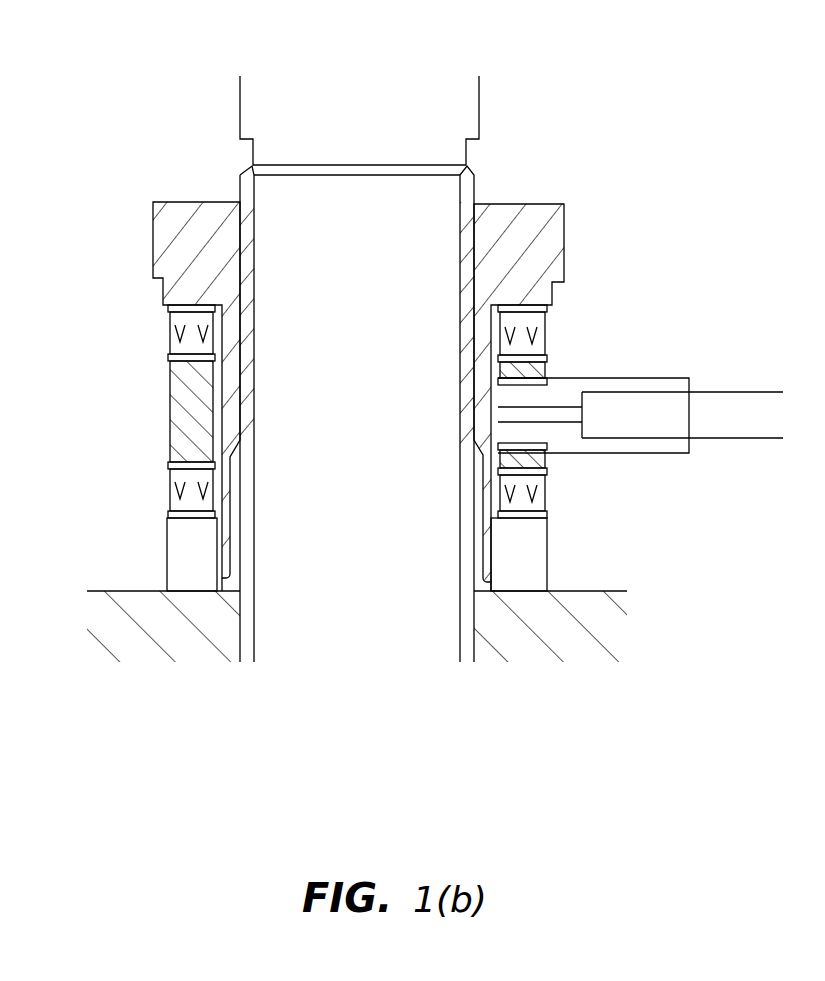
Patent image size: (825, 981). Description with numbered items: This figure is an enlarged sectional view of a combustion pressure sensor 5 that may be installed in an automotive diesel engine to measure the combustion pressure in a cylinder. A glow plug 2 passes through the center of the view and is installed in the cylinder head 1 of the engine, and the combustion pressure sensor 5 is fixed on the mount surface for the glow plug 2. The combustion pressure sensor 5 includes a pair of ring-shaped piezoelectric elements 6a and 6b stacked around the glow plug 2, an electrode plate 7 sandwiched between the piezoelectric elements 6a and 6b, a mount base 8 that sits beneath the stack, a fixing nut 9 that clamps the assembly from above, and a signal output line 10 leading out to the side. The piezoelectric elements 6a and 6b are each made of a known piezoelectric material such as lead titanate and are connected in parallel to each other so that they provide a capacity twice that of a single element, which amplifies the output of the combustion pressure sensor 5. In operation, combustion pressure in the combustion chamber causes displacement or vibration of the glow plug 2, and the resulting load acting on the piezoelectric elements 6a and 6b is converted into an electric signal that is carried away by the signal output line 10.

The cylinder head 1 is at (585, 591).
The glow plug 2 is at (480, 104).
The combustion pressure sensor 5 is at (590, 219).
The piezoelectric element 6a is at (547, 333).
The piezoelectric element 6b is at (547, 497).
The electrode plate 7 is at (168, 397).
The mount base 8 is at (167, 548).
The fixing nut 9 is at (183, 202).
The signal output line 10 is at (735, 392).